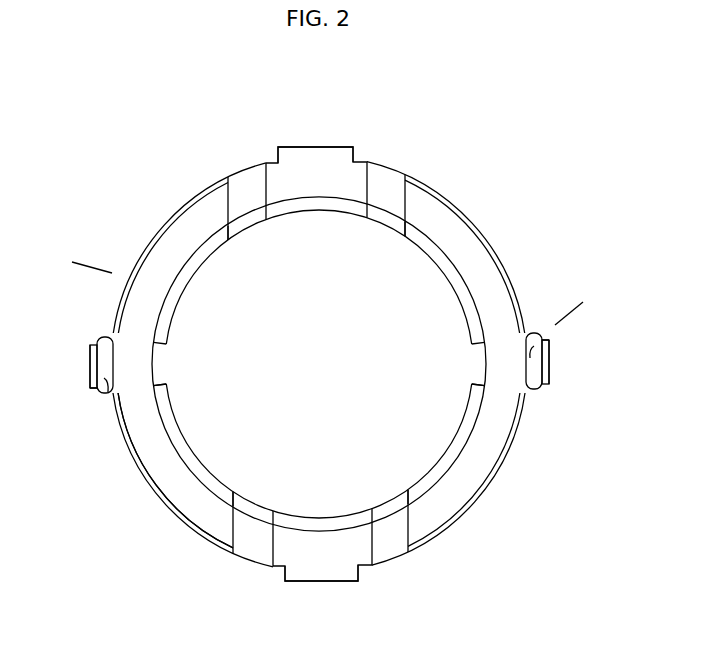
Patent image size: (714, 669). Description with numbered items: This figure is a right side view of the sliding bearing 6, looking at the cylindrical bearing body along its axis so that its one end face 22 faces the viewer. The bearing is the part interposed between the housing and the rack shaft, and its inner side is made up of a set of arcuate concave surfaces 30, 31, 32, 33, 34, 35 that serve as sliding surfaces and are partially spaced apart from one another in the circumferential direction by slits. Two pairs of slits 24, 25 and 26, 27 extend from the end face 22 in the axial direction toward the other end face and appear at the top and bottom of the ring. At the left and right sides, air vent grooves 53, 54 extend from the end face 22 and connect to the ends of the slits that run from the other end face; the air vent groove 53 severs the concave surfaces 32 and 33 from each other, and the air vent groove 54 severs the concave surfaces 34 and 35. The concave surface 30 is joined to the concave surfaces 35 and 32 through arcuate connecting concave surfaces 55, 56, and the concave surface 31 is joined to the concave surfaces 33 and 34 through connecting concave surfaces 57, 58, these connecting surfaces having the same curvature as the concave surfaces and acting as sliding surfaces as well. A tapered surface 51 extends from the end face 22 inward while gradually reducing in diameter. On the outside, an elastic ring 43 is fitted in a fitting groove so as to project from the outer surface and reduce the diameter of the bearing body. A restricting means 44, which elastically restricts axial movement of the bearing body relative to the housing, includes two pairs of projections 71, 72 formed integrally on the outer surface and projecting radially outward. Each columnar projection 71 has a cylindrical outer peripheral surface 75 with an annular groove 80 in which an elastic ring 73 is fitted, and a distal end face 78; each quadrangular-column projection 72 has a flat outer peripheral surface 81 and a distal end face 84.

The sliding bearing 6 is at (101, 274).
The one end face 22 is at (498, 262).
The slit 24 is at (387, 180).
The slit 25 is at (247, 180).
The slit 26 is at (252, 552).
The slit 27 is at (388, 552).
The arcuate concave surface 30 is at (320, 212).
The arcuate concave surface 31 is at (321, 515).
The arcuate concave surface 32 is at (192, 286).
The arcuate concave surface 33 is at (196, 447).
The arcuate concave surface 34 is at (441, 447).
The arcuate concave surface 35 is at (447, 286).
The elastic ring 43 is at (130, 452).
The restricting means 44 is at (560, 316).
The tapered surface 51 is at (173, 412).
The air vent groove 53 is at (162, 365).
The air vent groove 54 is at (476, 365).
The arcuate connecting concave surface 55 is at (384, 228).
The arcuate connecting concave surface 56 is at (250, 228).
The arcuate connecting concave surface 57 is at (252, 500).
The arcuate connecting concave surface 58 is at (383, 500).
The projection 71 is at (90, 371).
The projection 72 is at (319, 147).
The elastic ring 73 is at (102, 340).
The cylindrical outer peripheral surface 75 is at (92, 388).
The distal end face 78 is at (90, 352).
The annular groove 80 is at (104, 386).
The flat outer peripheral surface 81 is at (342, 147).
The distal end face 84 is at (288, 147).